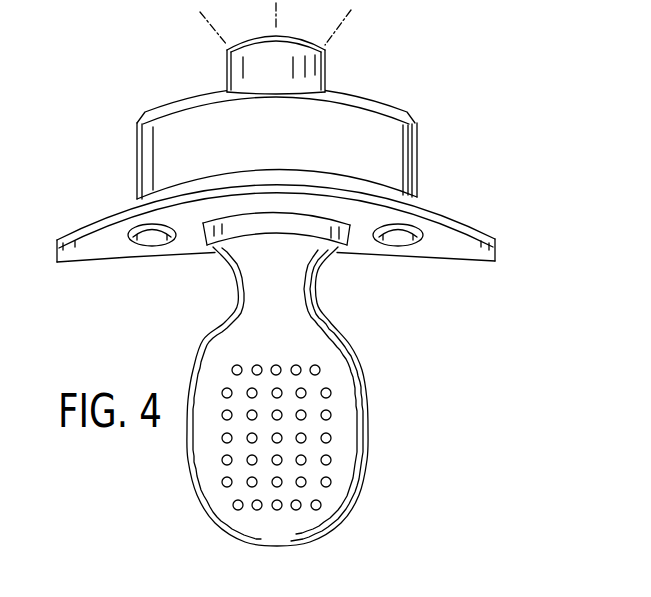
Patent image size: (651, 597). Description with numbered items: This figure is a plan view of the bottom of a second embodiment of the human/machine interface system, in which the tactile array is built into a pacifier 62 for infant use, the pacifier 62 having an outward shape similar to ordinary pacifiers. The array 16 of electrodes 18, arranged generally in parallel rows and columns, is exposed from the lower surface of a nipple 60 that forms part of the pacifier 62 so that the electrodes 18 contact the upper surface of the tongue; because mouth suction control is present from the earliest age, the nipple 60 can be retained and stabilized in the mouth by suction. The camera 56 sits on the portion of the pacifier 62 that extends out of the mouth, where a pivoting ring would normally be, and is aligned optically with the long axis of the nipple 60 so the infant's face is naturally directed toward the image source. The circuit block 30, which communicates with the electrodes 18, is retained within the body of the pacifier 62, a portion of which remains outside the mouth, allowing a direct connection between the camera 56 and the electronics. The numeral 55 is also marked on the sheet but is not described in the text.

The array 16 is at (380, 363).
The electrodes 18 is at (331, 460).
The circuit block 30 is at (432, 143).
The camera 56 is at (327, 72).
The nipple 60 is at (187, 482).
The pacifier 62 is at (482, 190).
The cut-off reference numeral 55 is at (142, 590).